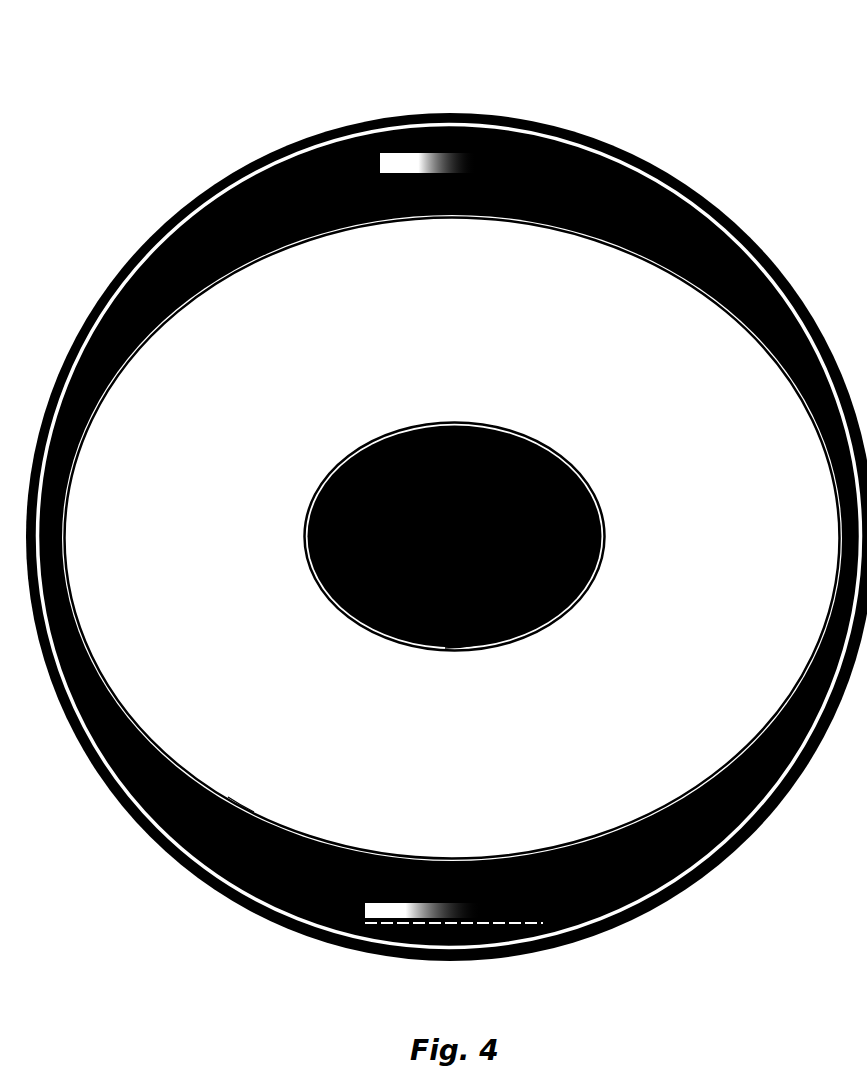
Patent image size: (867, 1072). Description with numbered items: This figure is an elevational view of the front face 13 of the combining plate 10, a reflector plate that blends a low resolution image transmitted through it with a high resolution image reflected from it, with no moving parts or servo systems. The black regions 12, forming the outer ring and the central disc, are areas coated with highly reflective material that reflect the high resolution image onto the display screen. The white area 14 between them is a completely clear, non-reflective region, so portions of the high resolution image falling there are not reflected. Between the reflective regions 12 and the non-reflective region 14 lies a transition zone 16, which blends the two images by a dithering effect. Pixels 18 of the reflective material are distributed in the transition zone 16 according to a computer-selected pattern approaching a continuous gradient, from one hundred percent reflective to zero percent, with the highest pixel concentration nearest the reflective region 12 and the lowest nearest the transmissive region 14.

The combining plate 10 is at (662, 147).
The black regions 12 is at (327, 587).
The front face 13 is at (626, 312).
The white area 14 is at (500, 764).
The transition zone 16 is at (392, 637).
The pixels 18 is at (477, 646).